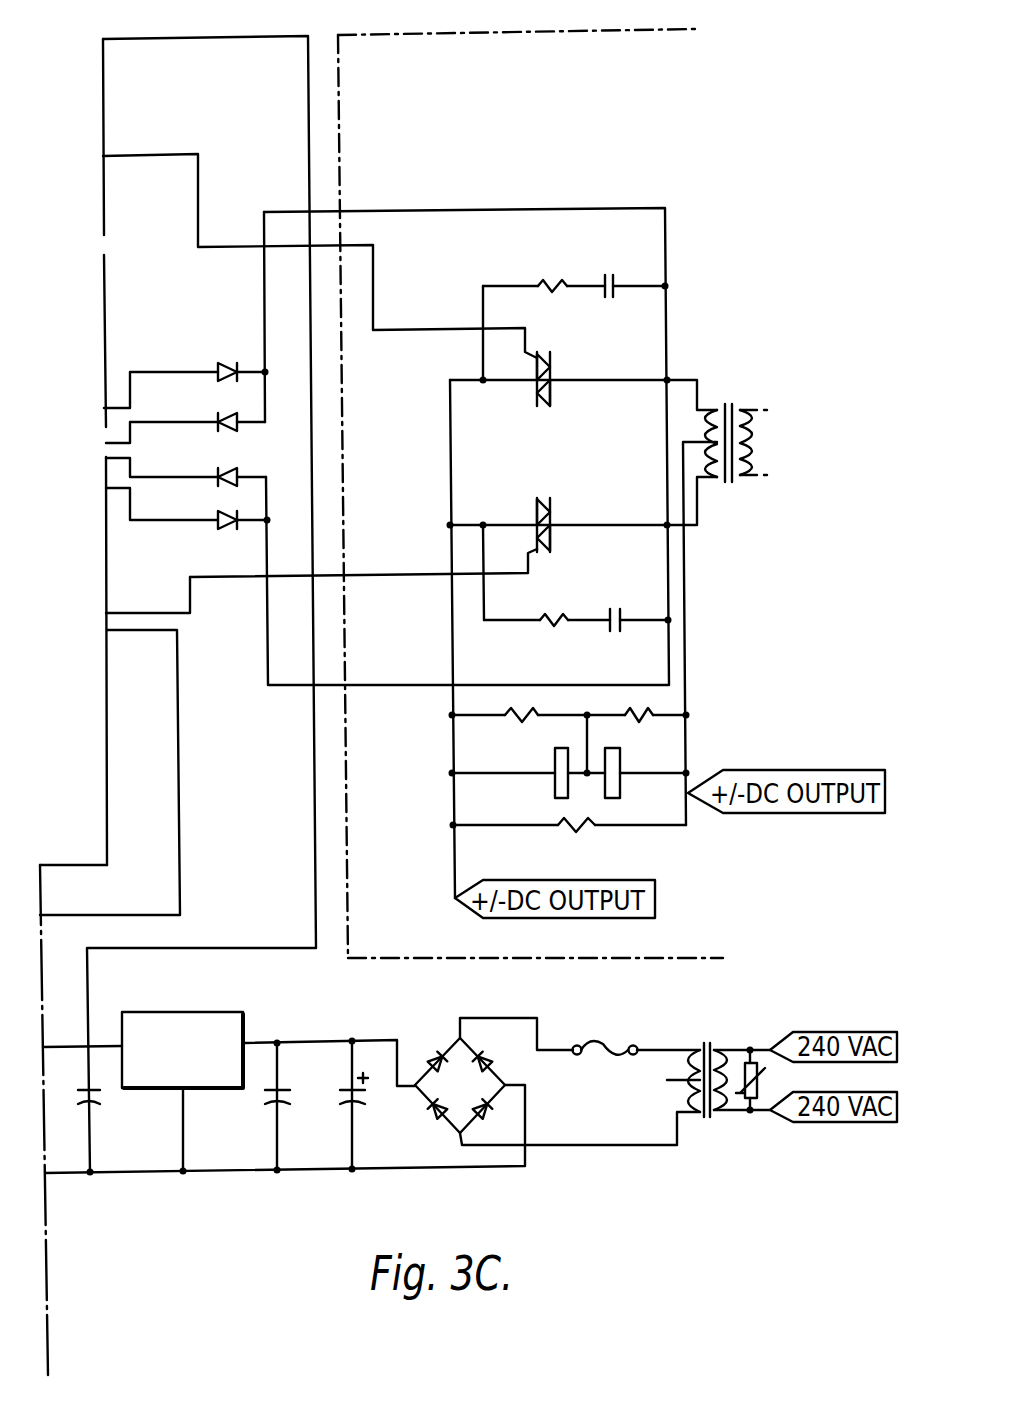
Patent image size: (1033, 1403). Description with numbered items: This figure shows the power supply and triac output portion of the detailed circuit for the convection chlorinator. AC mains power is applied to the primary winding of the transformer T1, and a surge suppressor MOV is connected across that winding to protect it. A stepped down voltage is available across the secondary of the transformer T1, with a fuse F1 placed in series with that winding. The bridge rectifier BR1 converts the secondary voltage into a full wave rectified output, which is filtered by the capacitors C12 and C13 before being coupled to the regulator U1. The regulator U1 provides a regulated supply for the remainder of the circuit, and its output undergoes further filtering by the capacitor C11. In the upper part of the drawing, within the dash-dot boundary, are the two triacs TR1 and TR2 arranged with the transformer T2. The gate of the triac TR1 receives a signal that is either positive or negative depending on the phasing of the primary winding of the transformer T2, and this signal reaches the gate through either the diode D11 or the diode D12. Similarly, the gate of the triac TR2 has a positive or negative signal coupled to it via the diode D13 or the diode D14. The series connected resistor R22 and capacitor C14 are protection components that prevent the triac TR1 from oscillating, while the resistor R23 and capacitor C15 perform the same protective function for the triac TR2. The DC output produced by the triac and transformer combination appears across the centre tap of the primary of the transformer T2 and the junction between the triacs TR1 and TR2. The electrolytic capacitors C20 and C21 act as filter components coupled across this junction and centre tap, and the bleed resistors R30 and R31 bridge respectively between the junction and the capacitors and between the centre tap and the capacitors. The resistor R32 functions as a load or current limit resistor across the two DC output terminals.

The diode D11 is at (216, 369).
The diode D12 is at (216, 420).
The diode D13 is at (216, 475).
The diode D14 is at (216, 519).
The resistor R22 is at (554, 283).
The capacitor C14 is at (603, 282).
The triac TR1 is at (537, 406).
The triac TR2 is at (537, 504).
The transformer T2 is at (736, 407).
The resistor R23 is at (546, 617).
The capacitor C15 is at (608, 628).
The bleed resistor R30 is at (527, 712).
The bleed resistor R31 is at (648, 712).
The electrolytic capacitor C20 is at (553, 763).
The electrolytic capacitor C21 is at (620, 765).
The resistor R32 is at (590, 826).
The regulator U1 is at (160, 1012).
The capacitor C11 is at (102, 1100).
The capacitor C12 is at (270, 1100).
The capacitor C13 is at (360, 1100).
The bridge rectifier BR1 is at (460, 1085).
The fuse F1 is at (600, 1045).
The transformer T1 is at (708, 1043).
The surge suppressor MOV is at (765, 1080).